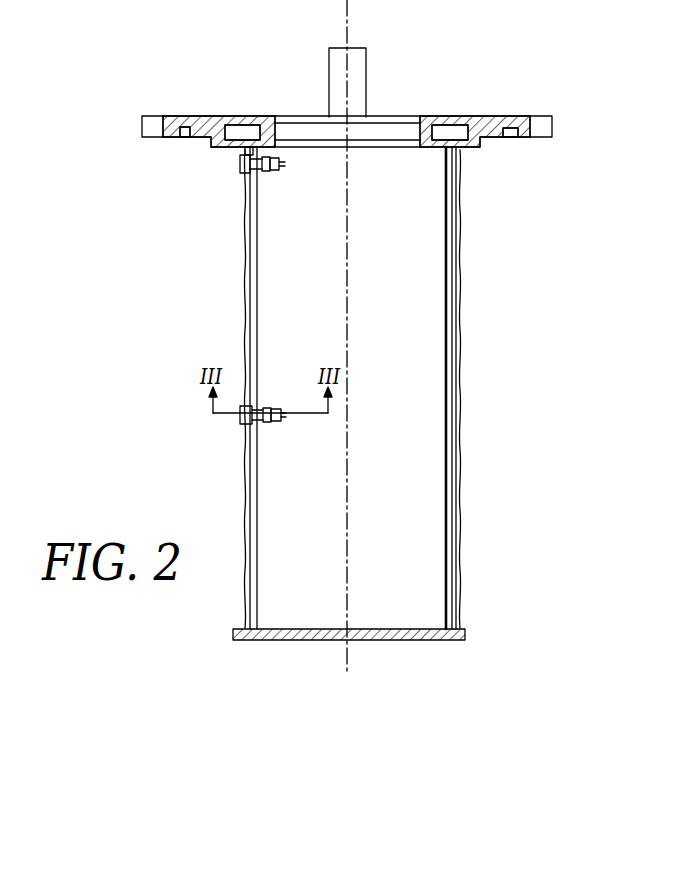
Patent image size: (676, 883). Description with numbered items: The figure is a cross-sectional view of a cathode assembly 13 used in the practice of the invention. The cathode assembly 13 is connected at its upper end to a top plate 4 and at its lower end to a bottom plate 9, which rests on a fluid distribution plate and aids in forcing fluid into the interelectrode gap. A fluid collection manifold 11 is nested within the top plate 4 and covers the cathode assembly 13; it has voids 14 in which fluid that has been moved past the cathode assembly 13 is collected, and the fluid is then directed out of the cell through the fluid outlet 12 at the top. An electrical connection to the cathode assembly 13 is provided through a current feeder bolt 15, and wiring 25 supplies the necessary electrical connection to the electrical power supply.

The top plate 4 is at (552, 131).
The bottom plate 9 is at (465, 634).
The fluid collection manifold 11 is at (458, 152).
The fluid outlet 12 is at (366, 69).
The cathode assembly 13 is at (461, 268).
The voids 14 is at (245, 125).
The current feeder bolt 15 is at (242, 163).
The wiring 25 is at (280, 164).